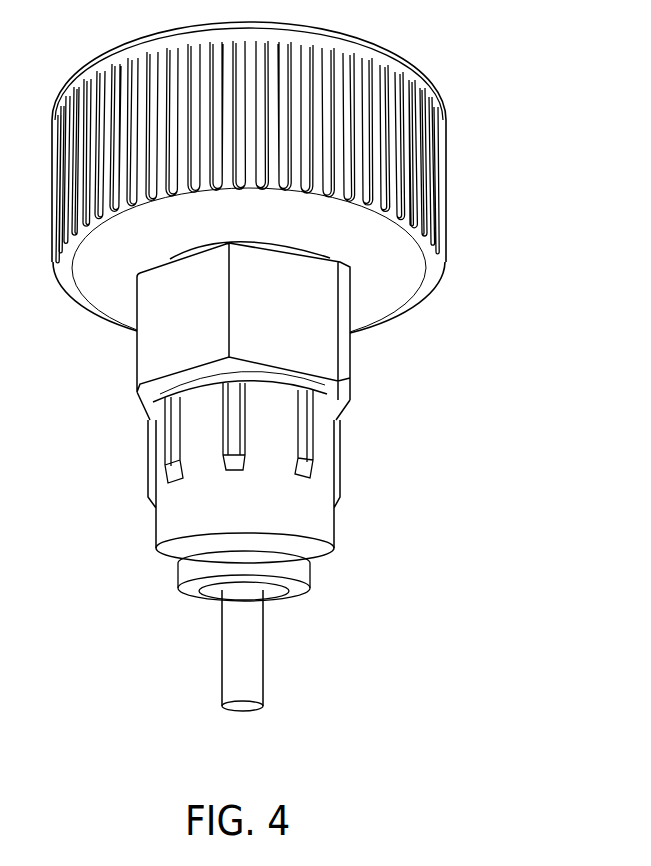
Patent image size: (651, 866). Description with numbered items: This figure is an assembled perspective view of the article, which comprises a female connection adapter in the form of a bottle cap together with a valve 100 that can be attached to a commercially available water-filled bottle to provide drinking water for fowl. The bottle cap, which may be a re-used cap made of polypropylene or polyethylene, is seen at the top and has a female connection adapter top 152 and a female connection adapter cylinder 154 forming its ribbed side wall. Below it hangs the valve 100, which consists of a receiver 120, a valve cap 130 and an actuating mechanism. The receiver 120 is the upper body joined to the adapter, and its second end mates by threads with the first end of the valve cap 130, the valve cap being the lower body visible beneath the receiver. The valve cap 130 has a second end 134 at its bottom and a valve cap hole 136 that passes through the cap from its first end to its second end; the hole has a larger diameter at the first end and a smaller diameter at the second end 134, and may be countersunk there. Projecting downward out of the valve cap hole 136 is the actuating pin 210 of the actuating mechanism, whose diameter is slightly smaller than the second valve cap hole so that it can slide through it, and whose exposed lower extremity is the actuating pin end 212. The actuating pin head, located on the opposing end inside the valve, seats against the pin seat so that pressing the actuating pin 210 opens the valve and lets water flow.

The valve 100 is at (130, 262).
The receiver 120 is at (352, 390).
The valve cap 130 is at (333, 520).
The second end 134 is at (293, 597).
The valve cap hole 136 is at (272, 596).
The female connection adapter top 152 is at (393, 310).
The female connection adapter cylinder 154 is at (444, 188).
The actuating pin 210 is at (265, 677).
The actuating pin end 212 is at (248, 707).